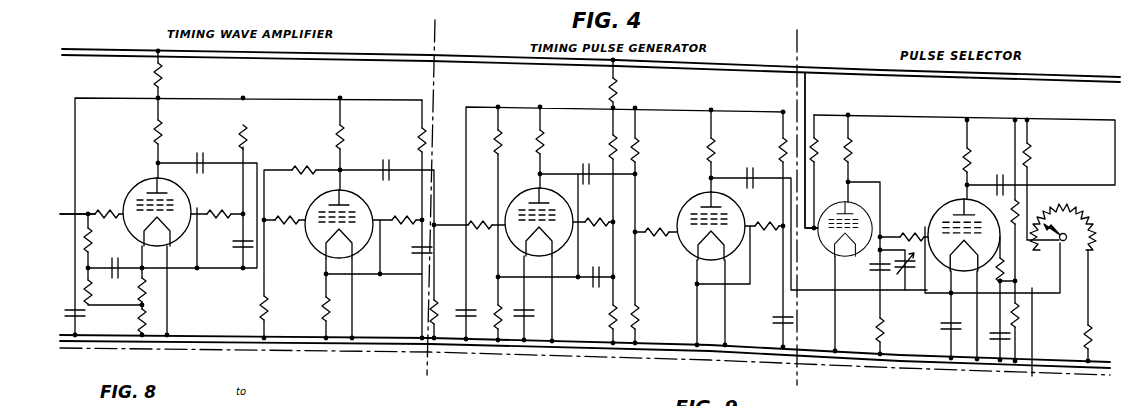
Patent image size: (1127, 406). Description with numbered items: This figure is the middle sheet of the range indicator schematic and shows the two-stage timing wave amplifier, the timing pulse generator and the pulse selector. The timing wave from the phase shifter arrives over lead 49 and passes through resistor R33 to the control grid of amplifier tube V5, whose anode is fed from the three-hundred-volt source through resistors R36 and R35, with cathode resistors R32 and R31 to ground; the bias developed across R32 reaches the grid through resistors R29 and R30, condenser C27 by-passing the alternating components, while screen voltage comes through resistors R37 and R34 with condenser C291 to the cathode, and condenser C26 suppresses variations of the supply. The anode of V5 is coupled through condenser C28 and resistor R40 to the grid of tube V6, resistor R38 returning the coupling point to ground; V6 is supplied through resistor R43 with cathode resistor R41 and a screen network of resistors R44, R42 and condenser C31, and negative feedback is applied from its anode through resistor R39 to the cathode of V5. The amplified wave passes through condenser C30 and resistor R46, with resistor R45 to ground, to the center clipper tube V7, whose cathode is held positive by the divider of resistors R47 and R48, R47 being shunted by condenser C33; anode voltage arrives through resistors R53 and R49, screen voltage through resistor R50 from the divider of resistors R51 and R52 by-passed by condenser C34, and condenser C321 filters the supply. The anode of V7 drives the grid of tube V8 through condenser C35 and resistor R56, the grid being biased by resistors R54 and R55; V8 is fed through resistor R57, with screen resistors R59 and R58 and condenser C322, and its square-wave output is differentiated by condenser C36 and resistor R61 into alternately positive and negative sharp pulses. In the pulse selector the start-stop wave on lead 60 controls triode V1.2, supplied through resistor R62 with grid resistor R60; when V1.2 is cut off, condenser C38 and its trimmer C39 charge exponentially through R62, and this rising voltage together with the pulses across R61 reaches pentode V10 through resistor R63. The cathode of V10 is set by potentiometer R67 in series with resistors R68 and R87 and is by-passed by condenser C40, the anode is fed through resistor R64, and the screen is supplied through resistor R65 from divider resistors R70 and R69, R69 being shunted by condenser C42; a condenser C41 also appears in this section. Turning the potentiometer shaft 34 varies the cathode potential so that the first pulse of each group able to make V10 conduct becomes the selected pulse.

The lead 49 is at (77, 207).
The potentiometer shaft 34 is at (82, 352).
The lead 60 is at (748, 74).
The electronic tube V5 is at (147, 178).
The amplifier tube V6 is at (341, 195).
The center clipper tube V7 is at (531, 192).
The electronic tube V8 is at (693, 195).
The triode electronic device V1.2 is at (831, 204).
The pentode electronic device V10 is at (951, 200).
The resistor R29 is at (89, 303).
The resistor R30 is at (92, 246).
The resistor R31 is at (150, 319).
The resistor R32 is at (150, 291).
The resistor R33 is at (114, 200).
The resistor R34 is at (226, 203).
The resistor R35 is at (163, 134).
The resistor R36 is at (166, 80).
The resistor R37 is at (248, 139).
The resistor R38 is at (259, 307).
The resistor R39 is at (302, 166).
The resistor R40 is at (288, 216).
The resistor R41 is at (320, 307).
The resistor R42 is at (406, 209).
The resistor R43 is at (334, 139).
The resistor R44 is at (416, 140).
The resistor R45 is at (427, 313).
The resistor R46 is at (480, 221).
The resistor R47 is at (500, 308).
The resistor R48 is at (502, 146).
The resistor R49 is at (544, 146).
The resistor R50 is at (600, 213).
The resistor R51 is at (607, 142).
The resistor R52 is at (608, 315).
The resistor R53 is at (619, 94).
The resistor R54 is at (640, 312).
The resistor R55 is at (640, 154).
The resistor R56 is at (656, 235).
The resistor R57 is at (706, 142).
The resistor R58 is at (773, 216).
The resistor R59 is at (780, 152).
The resistor R60 is at (818, 152).
The resistor R61 is at (882, 326).
The resistor R62 is at (854, 152).
The resistor R63 is at (910, 223).
The resistor R64 is at (969, 163).
The resistor R65 is at (998, 272).
The potentiometer R67 is at (1066, 203).
The resistor R68 is at (1029, 156).
The resistor R69 is at (1017, 306).
The resistor R70 is at (1018, 212).
The resistor R87 is at (1084, 330).
The condenser C26 is at (82, 314).
The condenser C27 is at (108, 276).
The condenser C28 is at (200, 167).
The condenser C291 is at (238, 247).
The condenser C30 is at (392, 157).
The condenser C31 is at (412, 252).
The condenser C321 is at (470, 310).
The condenser C322 is at (774, 322).
The condenser C33 is at (530, 310).
The condenser C34 is at (592, 284).
The condenser C35 is at (586, 169).
The condenser C36 is at (757, 165).
The condenser C38 is at (870, 273).
The variable condenser C39 is at (915, 276).
The condenser C40 is at (938, 325).
The capacitor C41 is at (1001, 170).
The condenser C42 is at (992, 340).